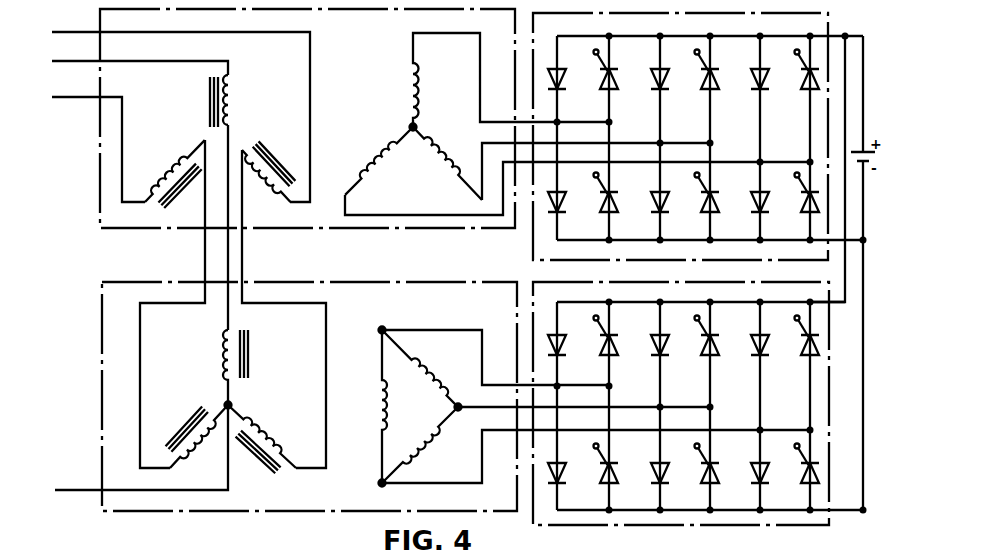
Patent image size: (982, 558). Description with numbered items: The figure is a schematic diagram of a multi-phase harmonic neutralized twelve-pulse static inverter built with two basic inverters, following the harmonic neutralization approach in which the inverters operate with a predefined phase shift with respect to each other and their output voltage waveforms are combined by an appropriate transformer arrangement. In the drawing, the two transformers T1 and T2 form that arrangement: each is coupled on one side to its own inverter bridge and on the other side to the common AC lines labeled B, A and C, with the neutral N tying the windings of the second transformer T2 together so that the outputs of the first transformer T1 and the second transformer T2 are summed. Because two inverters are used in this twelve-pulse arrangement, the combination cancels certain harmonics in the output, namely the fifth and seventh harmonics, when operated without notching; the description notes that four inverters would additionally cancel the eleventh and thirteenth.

The AC input phase B is at (172, 112).
The AC input phase A is at (131, 64).
The AC input phase C is at (89, 144).
The neutral N is at (134, 455).
The first transformer T1 is at (366, 87).
The second transformer T2 is at (365, 327).